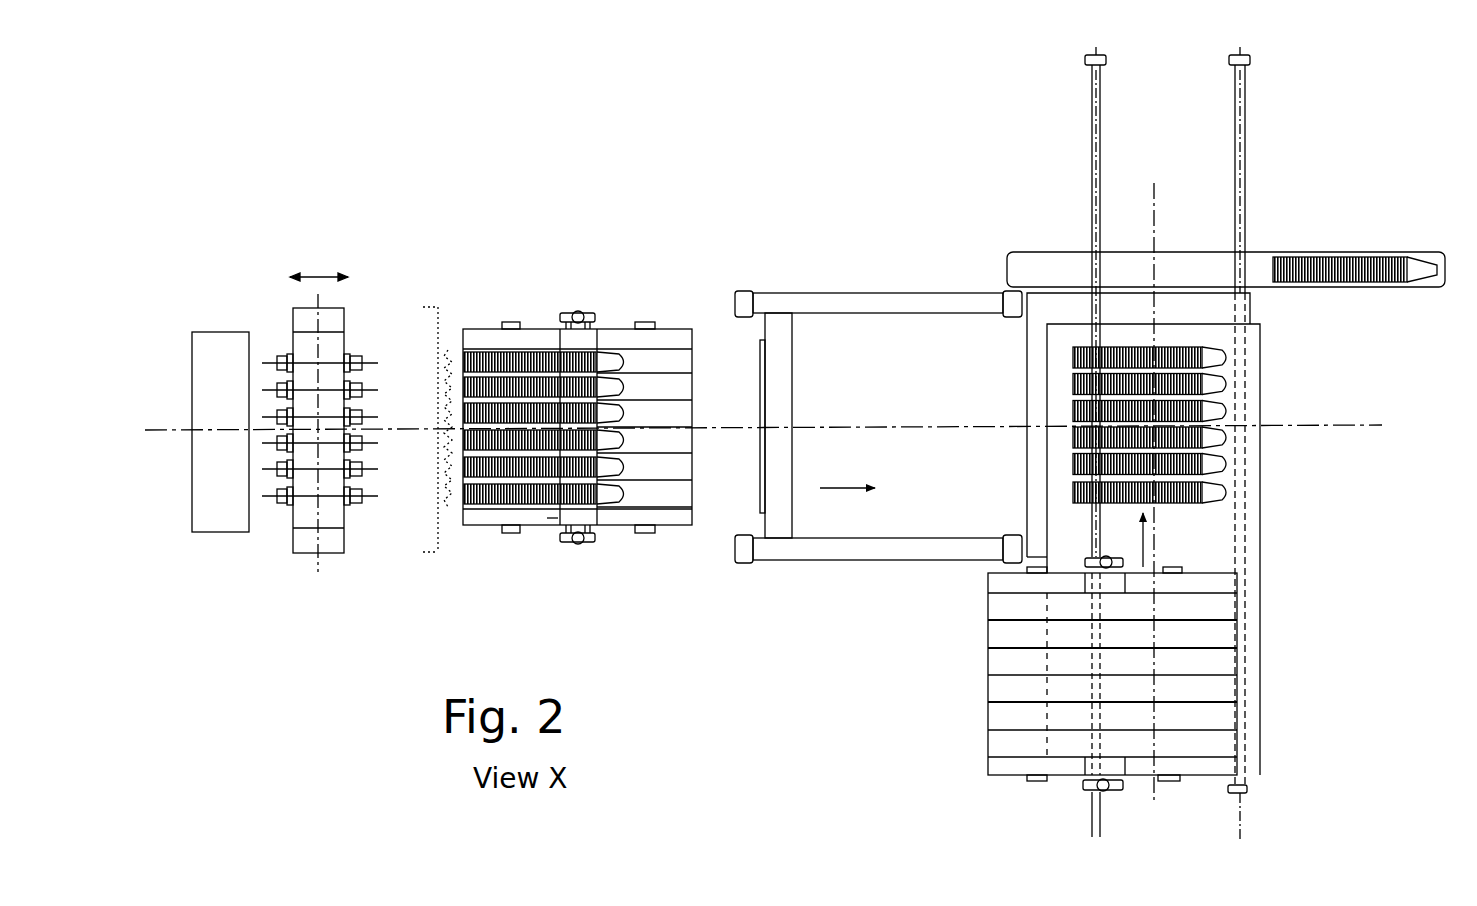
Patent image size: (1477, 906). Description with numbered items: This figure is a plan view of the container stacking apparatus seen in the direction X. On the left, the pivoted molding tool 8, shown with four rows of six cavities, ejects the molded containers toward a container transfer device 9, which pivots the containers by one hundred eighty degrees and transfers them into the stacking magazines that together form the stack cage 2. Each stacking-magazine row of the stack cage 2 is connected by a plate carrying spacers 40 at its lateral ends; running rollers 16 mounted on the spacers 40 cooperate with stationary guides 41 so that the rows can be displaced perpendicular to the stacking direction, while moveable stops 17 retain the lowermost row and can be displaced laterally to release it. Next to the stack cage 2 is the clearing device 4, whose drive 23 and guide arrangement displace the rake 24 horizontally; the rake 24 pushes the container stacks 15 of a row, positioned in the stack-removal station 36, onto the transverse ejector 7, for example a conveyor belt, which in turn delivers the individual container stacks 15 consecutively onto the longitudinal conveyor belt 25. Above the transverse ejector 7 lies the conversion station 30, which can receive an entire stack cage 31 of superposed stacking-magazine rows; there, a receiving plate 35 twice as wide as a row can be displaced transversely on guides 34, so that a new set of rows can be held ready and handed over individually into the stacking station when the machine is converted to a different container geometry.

The stack cage 2 is at (577, 431).
The clearing device 4 is at (878, 415).
The transverse ejector 7 is at (1027, 380).
The molding tool 8 is at (214, 359).
The container transfer device 9 is at (359, 294).
The container stack 15 is at (1377, 259).
The running rollers 16 is at (562, 317).
The moveable stops 17 is at (511, 534).
The drive 23 is at (927, 303).
The rake 24 is at (766, 395).
The longitudinal conveyor belt 25 is at (1226, 225).
The conversion station 30 is at (1327, 445).
The stack cage 31 is at (1268, 635).
The guides 34 is at (1102, 135).
The receiving plate 35 is at (1220, 503).
The stack-removal station 36 is at (932, 515).
The spacers 40 is at (553, 566).
The stationary guides 41 is at (577, 314).